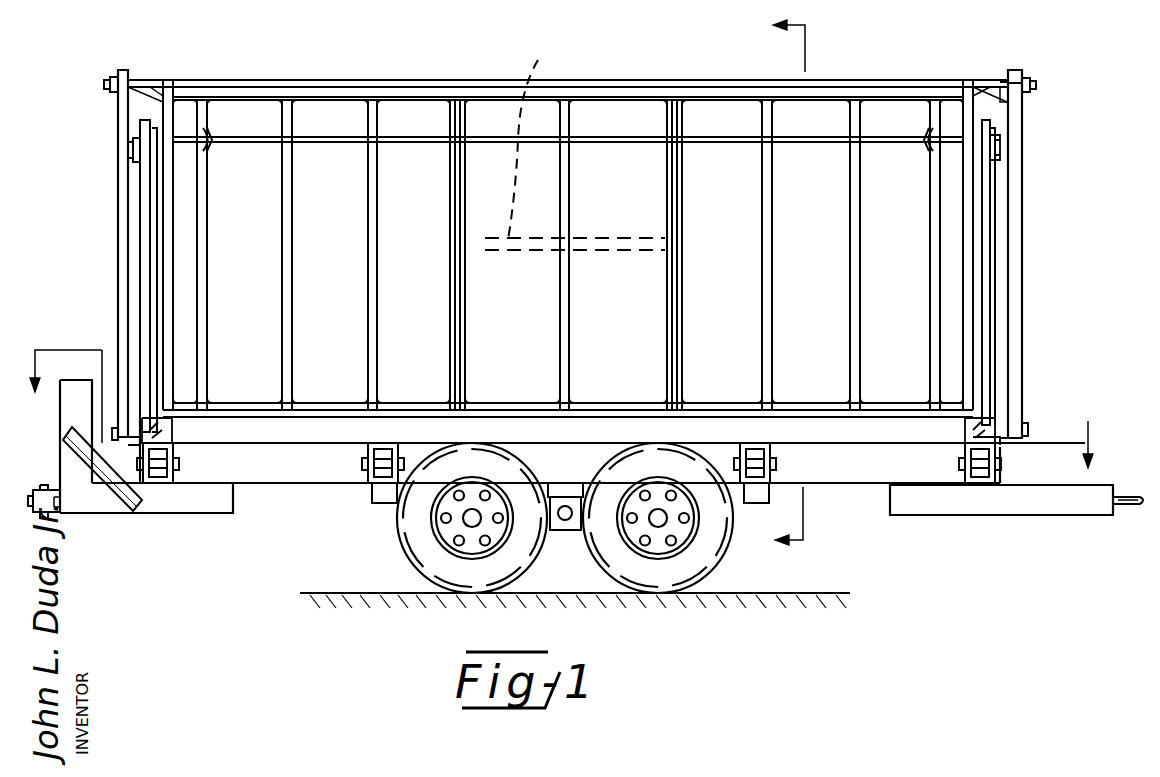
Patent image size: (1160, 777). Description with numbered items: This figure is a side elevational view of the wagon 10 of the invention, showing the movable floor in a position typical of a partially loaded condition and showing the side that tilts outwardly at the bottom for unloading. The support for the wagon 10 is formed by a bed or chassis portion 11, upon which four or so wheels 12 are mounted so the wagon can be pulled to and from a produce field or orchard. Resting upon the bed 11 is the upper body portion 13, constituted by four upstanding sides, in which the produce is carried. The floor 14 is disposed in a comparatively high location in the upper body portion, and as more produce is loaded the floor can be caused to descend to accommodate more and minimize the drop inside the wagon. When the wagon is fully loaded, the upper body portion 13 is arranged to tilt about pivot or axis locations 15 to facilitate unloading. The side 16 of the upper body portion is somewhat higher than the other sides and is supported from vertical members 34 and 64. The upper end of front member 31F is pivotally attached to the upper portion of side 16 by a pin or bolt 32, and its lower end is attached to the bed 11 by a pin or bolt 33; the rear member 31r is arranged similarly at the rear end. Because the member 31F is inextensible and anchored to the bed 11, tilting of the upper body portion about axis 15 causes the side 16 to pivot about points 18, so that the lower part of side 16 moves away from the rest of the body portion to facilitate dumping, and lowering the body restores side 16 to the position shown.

The wagon 10 is at (98, 60).
The bed or chassis portion 11 is at (848, 482).
The wheels 12 is at (520, 556).
The upper body portion 13 is at (1025, 167).
The floor 14 is at (575, 146).
The pivot or axis locations 15 is at (170, 465).
The side 16 is at (340, 80).
The pivot points 18 is at (208, 136).
The rear member 31r is at (118, 278).
The front member 31F is at (1012, 226).
The pin or bolt 32 is at (1032, 84).
The pin or bolt 33 is at (1028, 428).
The vertical member 34 is at (985, 272).
The vertical member 64 is at (148, 188).